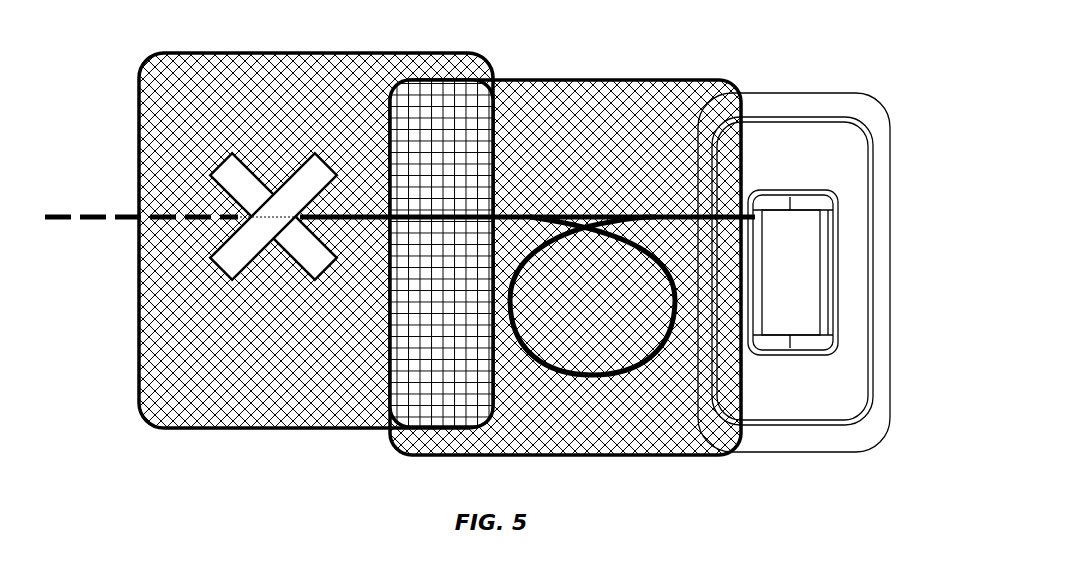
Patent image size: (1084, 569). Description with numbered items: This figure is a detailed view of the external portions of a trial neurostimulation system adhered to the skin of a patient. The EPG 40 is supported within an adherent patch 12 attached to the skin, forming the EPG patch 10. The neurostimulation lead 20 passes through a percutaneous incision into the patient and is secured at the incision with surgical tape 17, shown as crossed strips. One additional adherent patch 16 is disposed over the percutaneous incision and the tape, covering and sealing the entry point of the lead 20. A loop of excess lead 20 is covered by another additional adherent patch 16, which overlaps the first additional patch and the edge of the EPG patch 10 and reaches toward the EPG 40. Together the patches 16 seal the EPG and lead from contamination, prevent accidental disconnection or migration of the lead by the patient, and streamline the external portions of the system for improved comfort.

The EPG patch 10 is at (908, 389).
The adherent patch 12 is at (812, 175).
The additional adherent patch 16 is at (287, 143).
The surgical tape 17 is at (238, 173).
The neurostimulation lead 20 is at (536, 215).
The EPG 40 is at (815, 295).